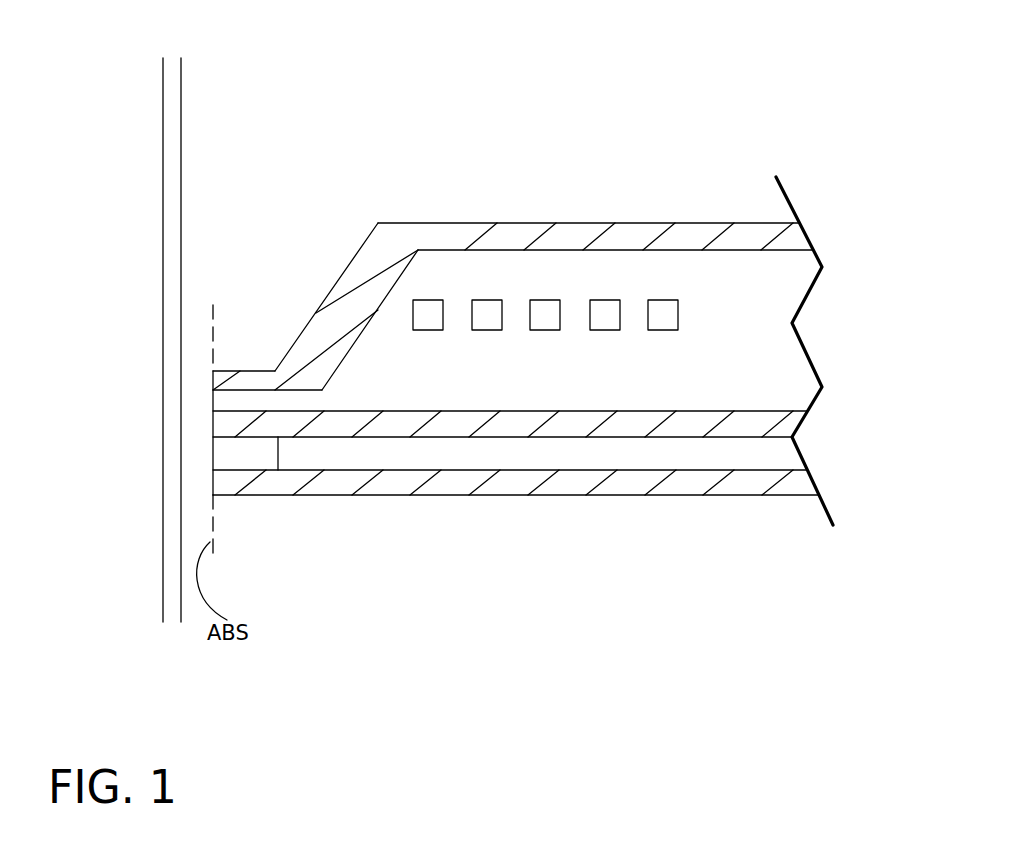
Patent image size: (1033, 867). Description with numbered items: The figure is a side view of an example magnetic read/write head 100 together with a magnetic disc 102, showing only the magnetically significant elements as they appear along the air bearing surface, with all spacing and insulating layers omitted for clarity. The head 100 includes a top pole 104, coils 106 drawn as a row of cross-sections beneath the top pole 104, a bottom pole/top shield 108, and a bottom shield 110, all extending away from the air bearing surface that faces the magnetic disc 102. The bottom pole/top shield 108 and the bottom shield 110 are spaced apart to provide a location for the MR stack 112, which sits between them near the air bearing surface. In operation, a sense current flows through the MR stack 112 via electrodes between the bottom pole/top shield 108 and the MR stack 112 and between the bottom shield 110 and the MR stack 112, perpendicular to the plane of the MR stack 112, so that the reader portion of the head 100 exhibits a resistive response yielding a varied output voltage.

The magnetic read/write head 100 is at (358, 124).
The magnetic disc 102 is at (162, 605).
The top pole 104 is at (790, 245).
The coils 106 is at (672, 313).
The bottom pole/top shield 108 is at (793, 423).
The bottom shield 110 is at (802, 482).
The MR stack 112 is at (263, 452).